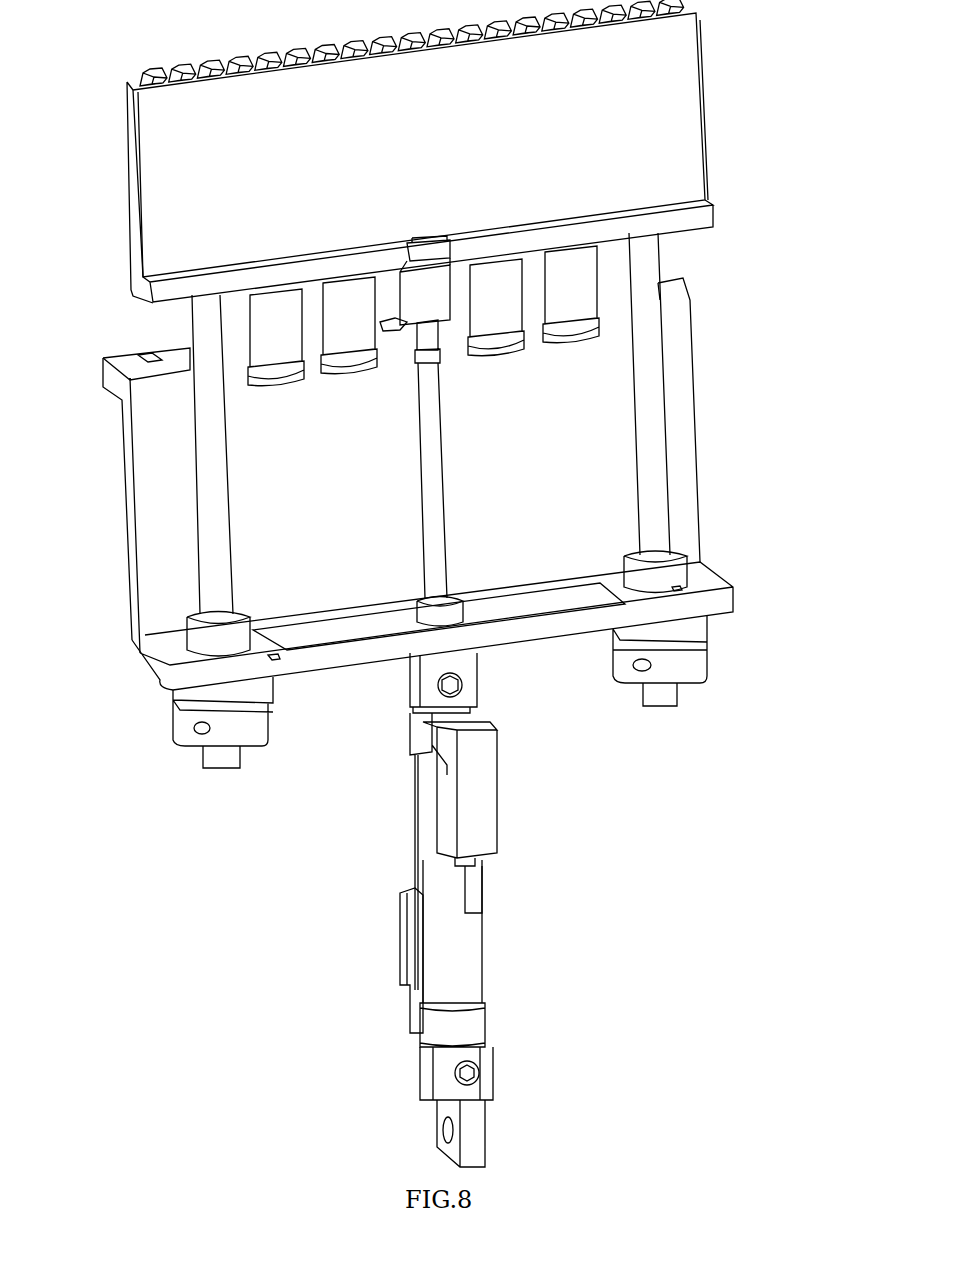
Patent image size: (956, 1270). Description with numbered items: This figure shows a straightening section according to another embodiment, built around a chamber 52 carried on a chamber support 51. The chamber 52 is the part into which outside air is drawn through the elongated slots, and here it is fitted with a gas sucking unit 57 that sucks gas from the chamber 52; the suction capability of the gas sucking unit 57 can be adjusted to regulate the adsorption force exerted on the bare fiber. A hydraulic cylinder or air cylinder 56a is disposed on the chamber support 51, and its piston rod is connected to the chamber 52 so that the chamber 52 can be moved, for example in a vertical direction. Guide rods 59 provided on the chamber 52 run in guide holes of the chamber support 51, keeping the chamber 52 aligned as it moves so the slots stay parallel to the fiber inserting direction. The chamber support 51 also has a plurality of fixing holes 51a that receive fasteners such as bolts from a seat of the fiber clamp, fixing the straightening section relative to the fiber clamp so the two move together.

The chamber support 51 is at (157, 528).
The fixing holes 51a is at (135, 353).
The chamber 52 is at (682, 142).
The hydraulic cylinder or air cylinder 56a is at (460, 965).
The gas sucking unit 57 is at (567, 297).
The guide rods 59 is at (656, 430).